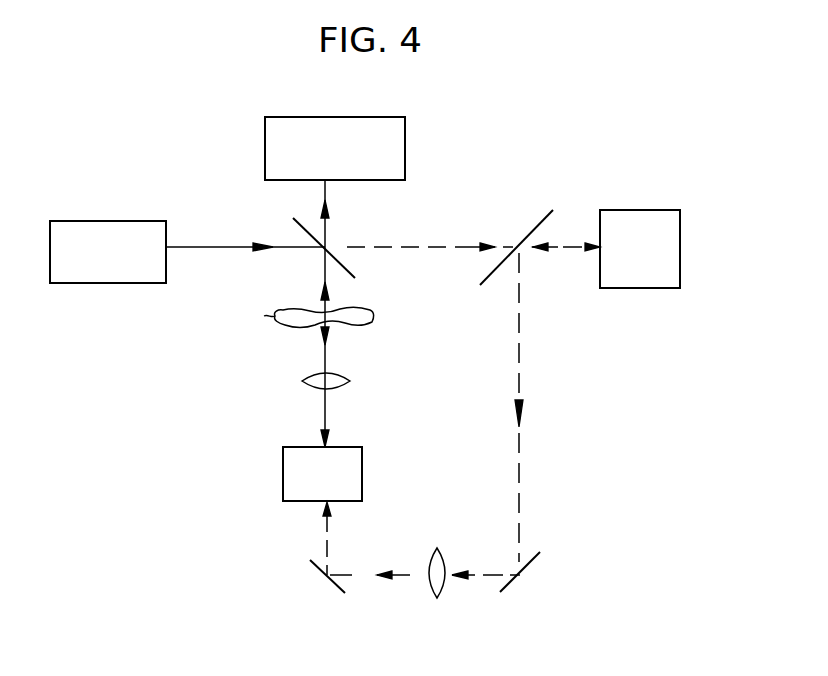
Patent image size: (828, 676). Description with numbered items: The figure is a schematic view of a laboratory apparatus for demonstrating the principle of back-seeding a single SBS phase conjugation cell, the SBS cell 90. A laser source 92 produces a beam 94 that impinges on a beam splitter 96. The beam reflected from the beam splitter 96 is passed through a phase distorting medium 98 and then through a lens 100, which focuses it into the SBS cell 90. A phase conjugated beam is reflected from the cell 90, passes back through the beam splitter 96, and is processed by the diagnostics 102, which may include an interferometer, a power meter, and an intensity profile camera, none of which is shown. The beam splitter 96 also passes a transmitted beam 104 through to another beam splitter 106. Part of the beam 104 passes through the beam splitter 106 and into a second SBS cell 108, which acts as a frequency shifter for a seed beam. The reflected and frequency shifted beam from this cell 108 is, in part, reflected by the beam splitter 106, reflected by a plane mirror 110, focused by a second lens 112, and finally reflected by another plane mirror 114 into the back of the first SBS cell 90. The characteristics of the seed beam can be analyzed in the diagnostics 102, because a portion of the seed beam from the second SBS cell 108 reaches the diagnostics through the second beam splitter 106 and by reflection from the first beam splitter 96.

The SBS cell 90 is at (362, 473).
The laser source 92 is at (78, 283).
The beam 94 is at (181, 249).
The beam splitter 96 is at (307, 229).
The phase distorting medium 98 is at (373, 318).
The lens 100 is at (350, 378).
The diagnostics 102 is at (405, 163).
The transmitted beam 104 is at (457, 247).
The beam splitter 106 is at (547, 214).
The second SBS cell 108 is at (680, 257).
The plane mirror 110 is at (535, 558).
The second lens 112 is at (431, 590).
The plane mirror 114 is at (337, 588).